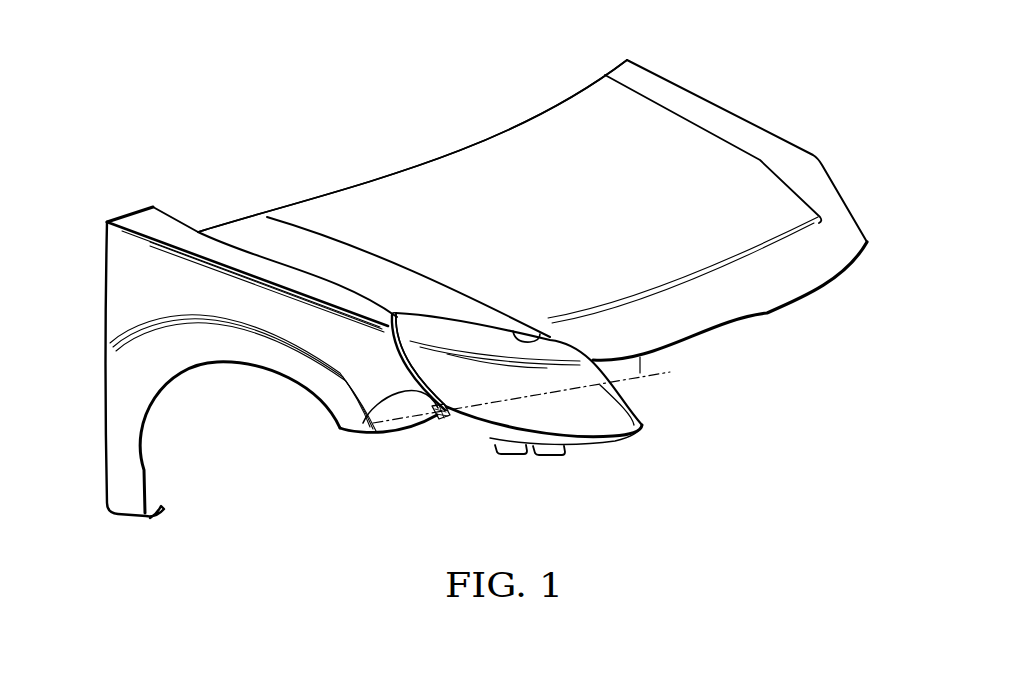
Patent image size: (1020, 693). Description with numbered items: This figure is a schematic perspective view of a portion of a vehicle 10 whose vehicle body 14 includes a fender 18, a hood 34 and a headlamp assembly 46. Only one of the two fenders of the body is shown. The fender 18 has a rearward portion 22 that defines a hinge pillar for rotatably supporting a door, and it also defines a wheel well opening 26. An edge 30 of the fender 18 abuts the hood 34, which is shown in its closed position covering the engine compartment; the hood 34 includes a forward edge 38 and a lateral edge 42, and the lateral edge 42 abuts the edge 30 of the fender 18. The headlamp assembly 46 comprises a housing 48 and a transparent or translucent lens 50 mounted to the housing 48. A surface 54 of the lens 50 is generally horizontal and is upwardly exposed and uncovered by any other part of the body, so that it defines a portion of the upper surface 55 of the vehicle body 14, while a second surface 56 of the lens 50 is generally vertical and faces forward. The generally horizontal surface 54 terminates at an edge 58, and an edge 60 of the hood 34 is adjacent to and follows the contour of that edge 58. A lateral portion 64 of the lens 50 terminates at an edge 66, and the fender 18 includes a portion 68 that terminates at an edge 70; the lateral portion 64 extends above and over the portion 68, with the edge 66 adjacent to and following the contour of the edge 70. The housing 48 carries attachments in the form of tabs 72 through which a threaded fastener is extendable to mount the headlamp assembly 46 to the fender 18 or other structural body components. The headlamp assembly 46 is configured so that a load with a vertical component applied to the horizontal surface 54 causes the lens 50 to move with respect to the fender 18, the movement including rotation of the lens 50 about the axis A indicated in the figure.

The vehicle 10 is at (667, 48).
The vehicle body 14 is at (736, 121).
The fender 18 is at (150, 223).
The rearward portion 22 is at (105, 423).
The wheel well opening 26 is at (227, 363).
The edge 30 is at (262, 257).
The hood 34 is at (503, 155).
The forward edge 38 is at (760, 316).
The lateral edge 42 is at (338, 308).
The headlamp assembly 46 is at (607, 400).
The housing 48 is at (487, 438).
The lens 50 is at (633, 433).
The surface 54 is at (482, 338).
The upper surface 55 is at (568, 177).
The surface 56 is at (570, 407).
The edge 58 is at (493, 325).
The edge 60 is at (538, 337).
The lateral portion 64 is at (420, 330).
The edge 66 is at (406, 390).
The portion 68 is at (358, 432).
The edge 70 is at (410, 364).
The tabs 72 is at (447, 418).
The axis A is at (642, 347).